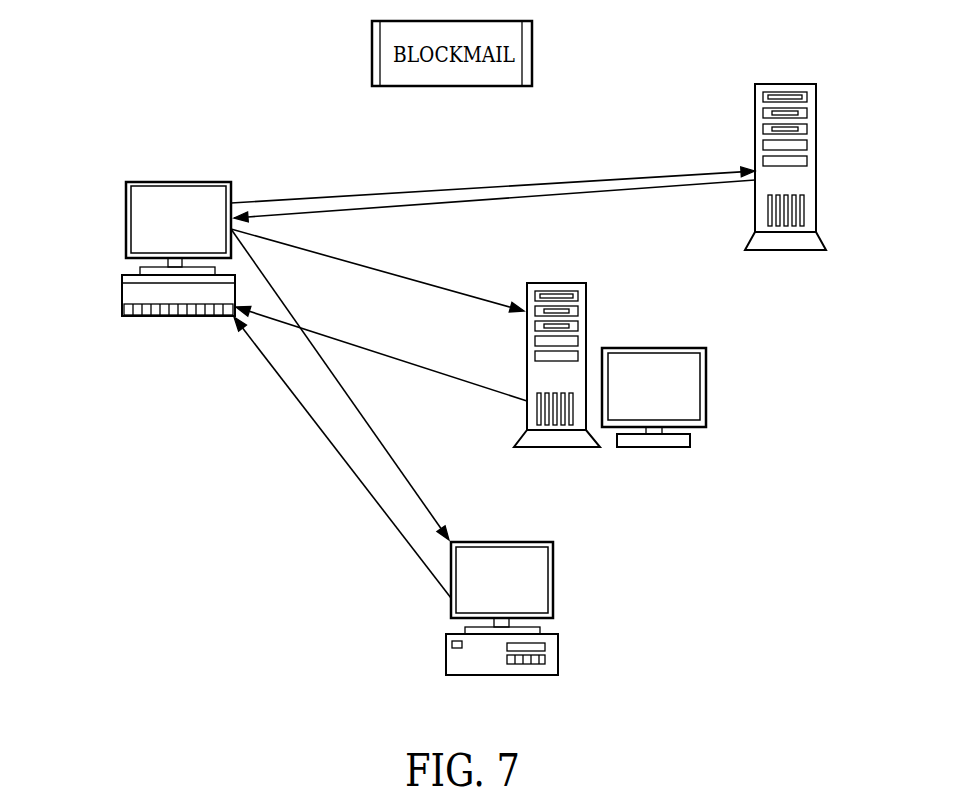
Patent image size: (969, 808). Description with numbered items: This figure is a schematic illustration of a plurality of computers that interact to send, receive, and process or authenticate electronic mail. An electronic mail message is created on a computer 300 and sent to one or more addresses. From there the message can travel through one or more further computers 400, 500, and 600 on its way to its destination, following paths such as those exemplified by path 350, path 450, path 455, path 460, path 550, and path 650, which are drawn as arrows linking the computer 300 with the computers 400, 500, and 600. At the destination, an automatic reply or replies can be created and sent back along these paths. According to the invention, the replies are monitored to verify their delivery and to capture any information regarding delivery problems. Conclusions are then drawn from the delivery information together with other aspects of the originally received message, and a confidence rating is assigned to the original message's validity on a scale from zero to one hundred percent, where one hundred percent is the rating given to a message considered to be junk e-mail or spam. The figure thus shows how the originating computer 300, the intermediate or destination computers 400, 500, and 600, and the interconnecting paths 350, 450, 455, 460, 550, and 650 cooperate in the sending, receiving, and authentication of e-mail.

The computer 300 is at (127, 216).
The computer 400 is at (818, 125).
The computer 500 is at (588, 322).
The computer 600 is at (553, 560).
The path 350 is at (367, 193).
The path 450 is at (528, 198).
The path 455 is at (385, 273).
The path 550 is at (390, 353).
The path 460 is at (347, 387).
The path 650 is at (325, 437).